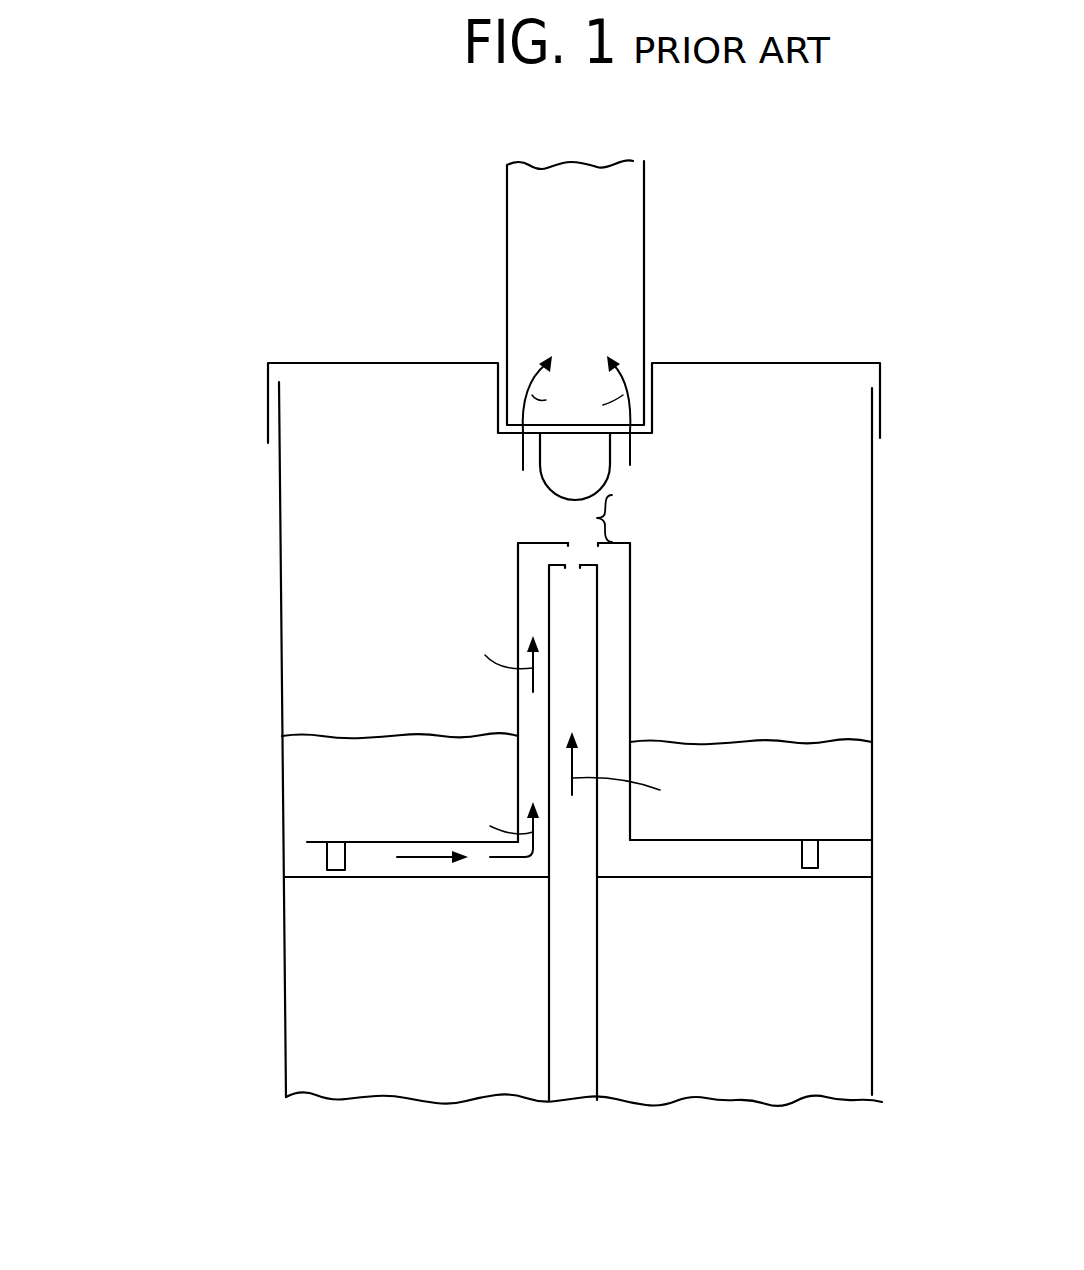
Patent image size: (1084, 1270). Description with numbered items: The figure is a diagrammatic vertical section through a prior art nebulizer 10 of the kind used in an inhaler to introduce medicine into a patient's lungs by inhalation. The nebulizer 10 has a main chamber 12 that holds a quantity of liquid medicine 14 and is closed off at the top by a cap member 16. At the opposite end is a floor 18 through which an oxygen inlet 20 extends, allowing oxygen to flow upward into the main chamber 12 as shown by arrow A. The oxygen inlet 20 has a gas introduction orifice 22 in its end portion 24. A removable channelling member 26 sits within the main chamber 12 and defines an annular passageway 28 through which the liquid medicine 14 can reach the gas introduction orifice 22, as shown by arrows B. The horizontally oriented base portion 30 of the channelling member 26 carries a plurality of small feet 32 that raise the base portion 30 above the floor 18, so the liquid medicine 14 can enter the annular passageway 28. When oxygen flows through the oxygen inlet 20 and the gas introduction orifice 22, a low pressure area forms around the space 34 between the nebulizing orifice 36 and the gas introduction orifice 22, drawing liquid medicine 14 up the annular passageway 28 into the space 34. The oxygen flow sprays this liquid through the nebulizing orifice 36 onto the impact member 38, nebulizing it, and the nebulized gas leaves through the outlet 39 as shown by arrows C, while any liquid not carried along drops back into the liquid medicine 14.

The nebulizer 10 is at (135, 677).
The main chamber 12 is at (279, 568).
The liquid medicine 14 is at (850, 795).
The cap member 16 is at (800, 363).
The floor 18 is at (522, 870).
The oxygen inlet 20 is at (600, 942).
The gas introduction orifice 22 is at (573, 567).
The end portion 24 is at (588, 563).
The channelling member 26 is at (628, 652).
The annular passageway 28 is at (607, 698).
The base portion 30 is at (705, 840).
The feet 32 is at (327, 855).
The space 34 is at (575, 550).
The nebulizing orifice 36 is at (573, 538).
The impact member 38 is at (603, 485).
The outlet 39 is at (645, 240).